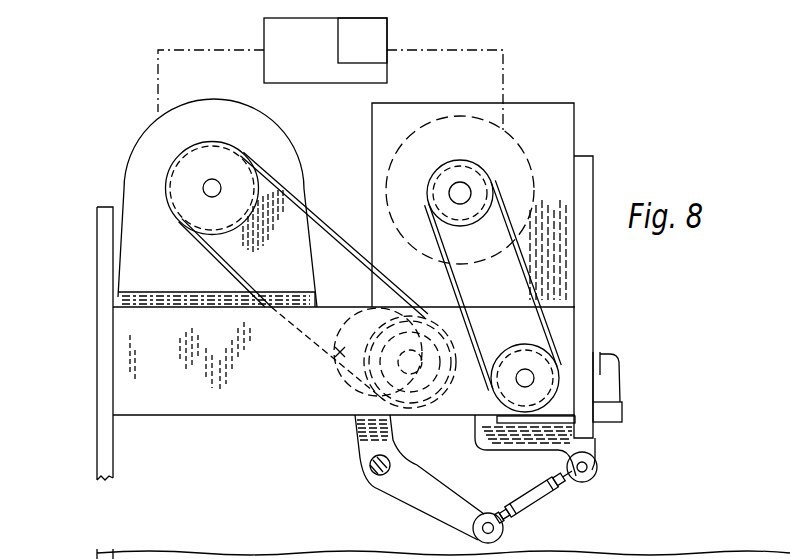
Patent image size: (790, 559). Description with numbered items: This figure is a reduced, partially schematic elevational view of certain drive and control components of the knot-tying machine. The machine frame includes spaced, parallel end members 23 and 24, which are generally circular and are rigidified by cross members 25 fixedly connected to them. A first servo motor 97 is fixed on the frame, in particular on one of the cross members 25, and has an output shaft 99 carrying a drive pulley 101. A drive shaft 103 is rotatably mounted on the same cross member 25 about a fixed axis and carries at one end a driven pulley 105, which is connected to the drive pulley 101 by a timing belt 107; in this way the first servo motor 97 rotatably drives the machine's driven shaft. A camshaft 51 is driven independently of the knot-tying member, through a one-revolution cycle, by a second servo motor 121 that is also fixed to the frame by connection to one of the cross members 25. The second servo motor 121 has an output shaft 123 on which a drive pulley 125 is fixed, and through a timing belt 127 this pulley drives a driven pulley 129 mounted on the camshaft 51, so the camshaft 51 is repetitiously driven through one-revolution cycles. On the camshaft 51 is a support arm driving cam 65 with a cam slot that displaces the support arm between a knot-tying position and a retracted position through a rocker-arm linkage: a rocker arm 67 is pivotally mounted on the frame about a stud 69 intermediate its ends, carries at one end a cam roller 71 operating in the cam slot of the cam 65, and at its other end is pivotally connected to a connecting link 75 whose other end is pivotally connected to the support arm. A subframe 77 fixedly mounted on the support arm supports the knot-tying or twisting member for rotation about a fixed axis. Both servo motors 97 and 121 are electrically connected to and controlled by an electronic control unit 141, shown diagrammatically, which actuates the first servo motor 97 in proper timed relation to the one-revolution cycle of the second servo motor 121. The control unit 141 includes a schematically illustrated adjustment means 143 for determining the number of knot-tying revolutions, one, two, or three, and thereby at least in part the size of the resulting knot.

The electronic control unit 141 is at (264, 23).
The adjustment means 143 is at (350, 34).
The second servo motor 121 is at (145, 147).
The drive pulley 125 is at (182, 175).
The output shaft 123 is at (207, 193).
The timing belt 127 is at (321, 220).
The end member 24 is at (97, 281).
The cross member 25 is at (138, 355).
The end member 23 is at (592, 165).
The first servo motor 97 is at (546, 120).
The drive pulley 101 is at (447, 170).
The output shaft 99 is at (471, 194).
The drive shaft 103 is at (530, 372).
The timing belt 107 is at (525, 268).
The support arm driving cam 65 is at (378, 303).
The camshaft 51 is at (352, 383).
The cam roller 71 is at (335, 353).
The driven pulley 129 is at (352, 424).
The rocker arm 67 is at (430, 477).
The stud 69 is at (370, 465).
The connecting link 75 is at (540, 482).
The subframe 77 is at (612, 422).
The driven pulley 105 is at (560, 411).